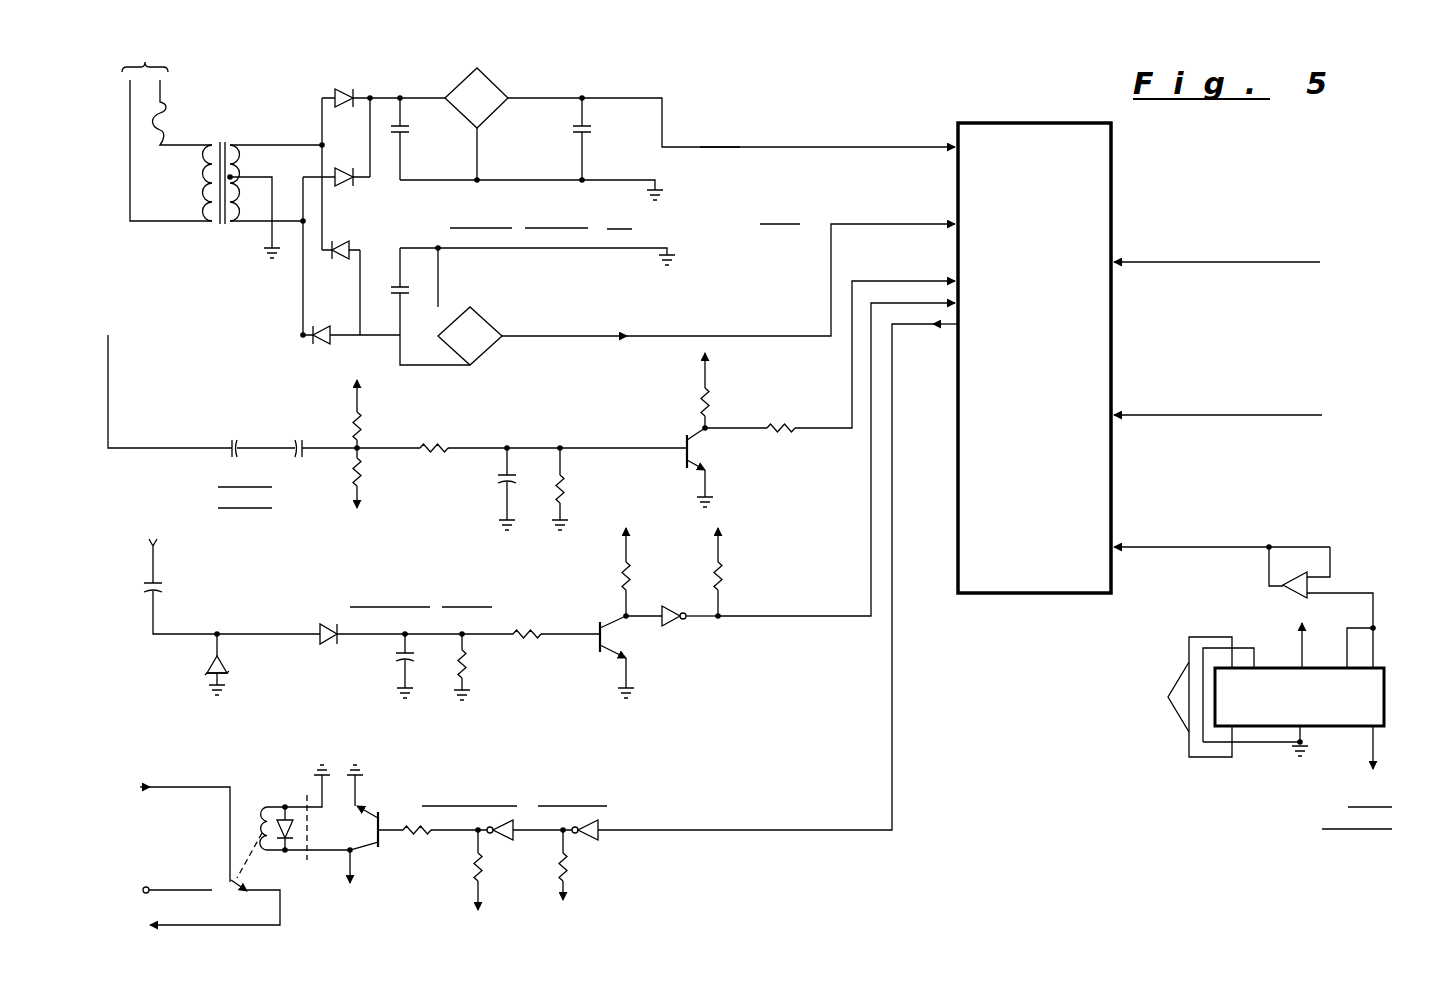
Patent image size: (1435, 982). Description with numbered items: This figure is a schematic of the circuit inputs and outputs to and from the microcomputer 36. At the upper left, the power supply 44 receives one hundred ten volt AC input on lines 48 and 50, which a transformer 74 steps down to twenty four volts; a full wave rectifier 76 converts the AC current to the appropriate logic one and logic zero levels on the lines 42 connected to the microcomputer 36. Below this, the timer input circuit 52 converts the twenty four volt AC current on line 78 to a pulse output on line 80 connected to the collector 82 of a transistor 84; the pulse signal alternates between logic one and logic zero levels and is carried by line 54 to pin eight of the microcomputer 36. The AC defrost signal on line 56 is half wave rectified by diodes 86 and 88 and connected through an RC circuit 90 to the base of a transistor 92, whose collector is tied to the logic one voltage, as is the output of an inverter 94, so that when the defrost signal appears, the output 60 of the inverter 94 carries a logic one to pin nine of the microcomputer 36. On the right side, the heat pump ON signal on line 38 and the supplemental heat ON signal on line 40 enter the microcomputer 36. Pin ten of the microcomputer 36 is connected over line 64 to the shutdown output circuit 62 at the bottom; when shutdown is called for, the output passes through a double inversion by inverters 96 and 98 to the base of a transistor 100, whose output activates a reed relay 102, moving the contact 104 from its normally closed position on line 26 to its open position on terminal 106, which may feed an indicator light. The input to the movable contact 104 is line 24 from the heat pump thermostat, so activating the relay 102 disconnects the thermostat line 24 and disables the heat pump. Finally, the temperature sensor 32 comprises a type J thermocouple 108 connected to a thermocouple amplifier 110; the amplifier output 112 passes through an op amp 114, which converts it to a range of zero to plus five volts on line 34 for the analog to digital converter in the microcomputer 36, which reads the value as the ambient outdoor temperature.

The thermostat line 24 is at (170, 786).
The line to heat pump 26 is at (175, 922).
The temperature sensor 32 is at (1363, 864).
The line to microcomputer 34 is at (1135, 546).
The microcomputer 36 is at (1013, 122).
The heat pump ON signal line 38 is at (1212, 265).
The supplemental heat ON signal line 40 is at (1240, 418).
The lines 42 is at (762, 143).
The power supply 44 is at (662, 216).
The AC input line 48 is at (162, 80).
The AC input line 50 is at (130, 100).
The timer input circuit 52 is at (296, 511).
The line 54 is at (921, 278).
The defrost signal line 56 is at (529, 614).
The inverter output 60 is at (866, 494).
The shutdown output circuit 62 is at (630, 810).
The line 64 is at (892, 787).
The transformer 74 is at (225, 125).
The full wave rectifier 76 is at (395, 91).
The line 78 is at (140, 448).
The pulse output line 80 is at (730, 428).
The collector 82 is at (700, 426).
The transistor 84 is at (677, 456).
The diode 86 is at (327, 646).
The diode 88 is at (236, 660).
The RC circuit 90 is at (491, 669).
The transistor 92 is at (612, 625).
The inverter 94 is at (676, 626).
The inverter 96 is at (503, 857).
The inverter 98 is at (581, 846).
The transistor 100 is at (373, 866).
The reed relay 102 is at (245, 802).
The movable contact 104 is at (236, 888).
The terminal 106 is at (173, 888).
The thermocouple 108 is at (1168, 697).
The thermocouple amplifier 110 is at (1232, 696).
The amplifier output 112 is at (1339, 590).
The op amp 114 is at (1302, 571).